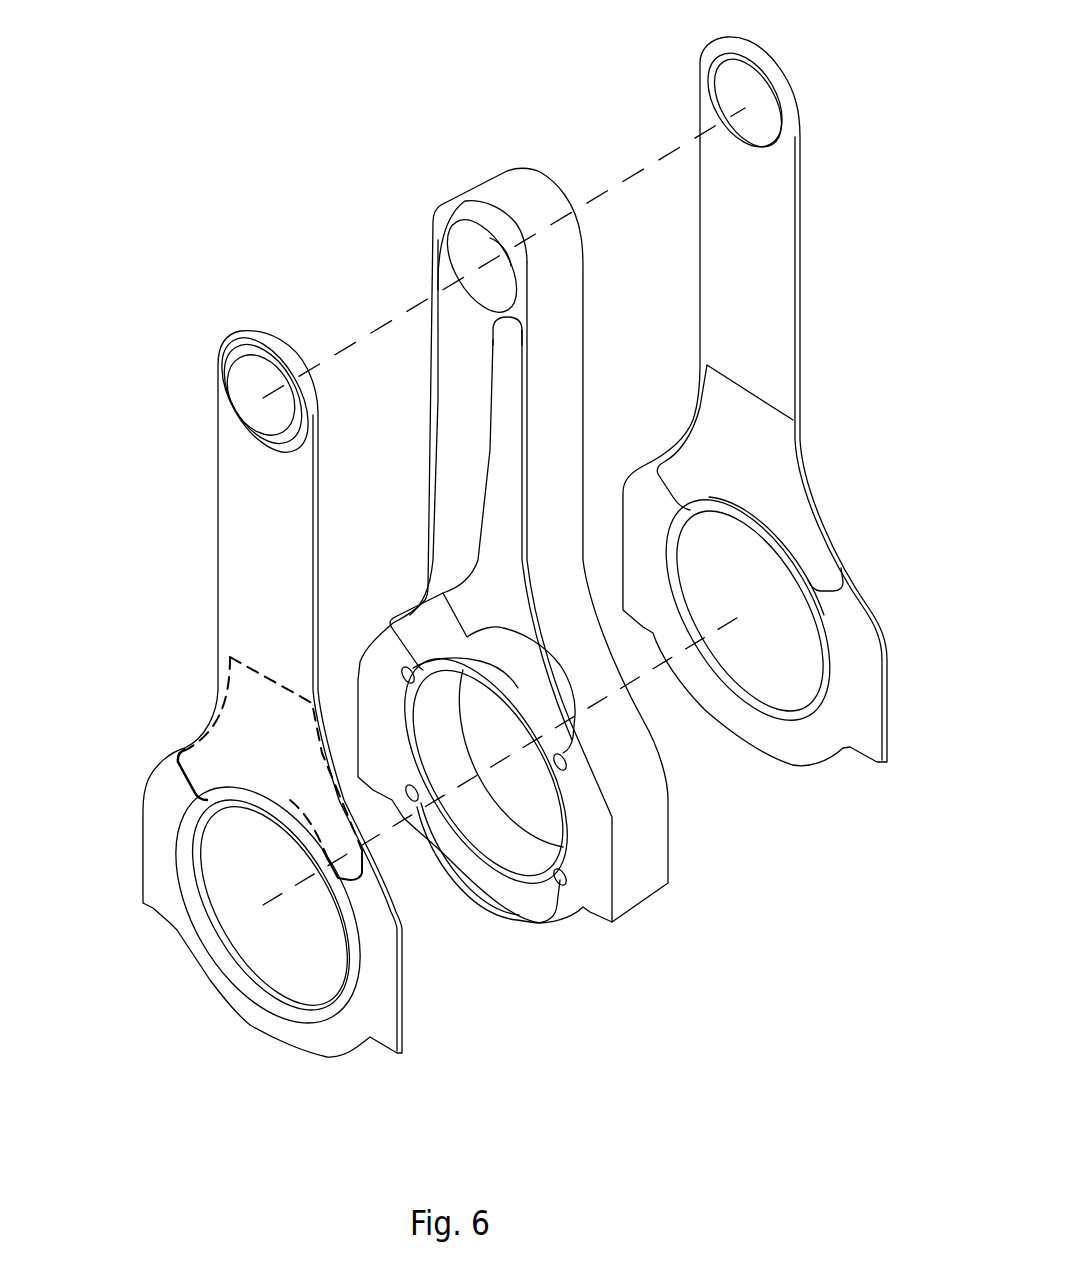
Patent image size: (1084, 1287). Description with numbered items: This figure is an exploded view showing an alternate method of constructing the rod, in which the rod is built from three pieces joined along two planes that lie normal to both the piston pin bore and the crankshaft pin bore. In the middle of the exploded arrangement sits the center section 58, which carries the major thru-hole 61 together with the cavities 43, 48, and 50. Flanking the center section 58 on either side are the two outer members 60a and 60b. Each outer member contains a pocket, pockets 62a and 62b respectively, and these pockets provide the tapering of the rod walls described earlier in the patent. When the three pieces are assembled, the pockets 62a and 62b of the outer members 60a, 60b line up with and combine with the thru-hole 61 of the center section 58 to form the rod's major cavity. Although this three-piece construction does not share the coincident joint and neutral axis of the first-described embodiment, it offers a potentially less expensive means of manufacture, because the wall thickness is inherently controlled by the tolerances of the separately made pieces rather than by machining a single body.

The center section 58 is at (360, 298).
The outer member 60a is at (160, 475).
The outer member 60b is at (640, 129).
The major thru-hole 61 is at (477, 530).
The pocket 62a is at (247, 737).
The pocket 62b is at (750, 464).
The cavity 43 is at (407, 678).
The cavity 48 is at (417, 803).
The cavity 50 is at (480, 890).